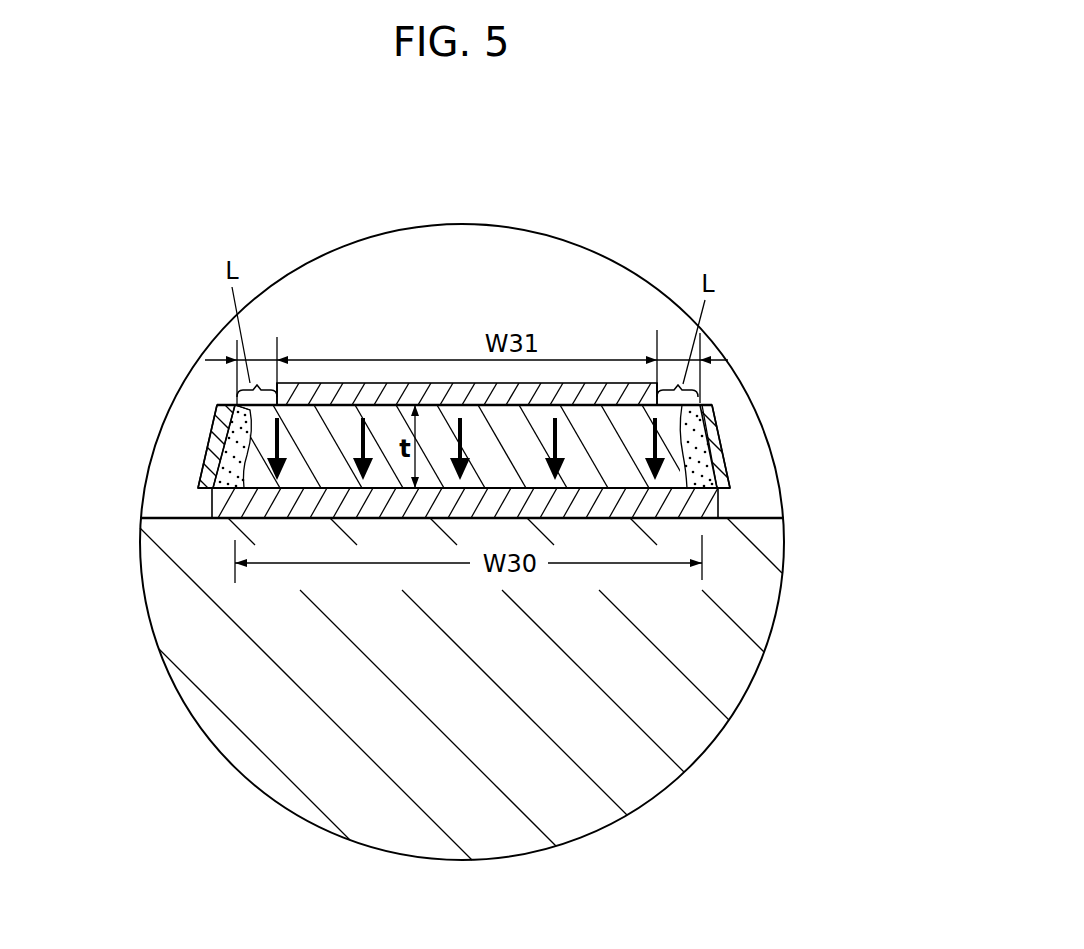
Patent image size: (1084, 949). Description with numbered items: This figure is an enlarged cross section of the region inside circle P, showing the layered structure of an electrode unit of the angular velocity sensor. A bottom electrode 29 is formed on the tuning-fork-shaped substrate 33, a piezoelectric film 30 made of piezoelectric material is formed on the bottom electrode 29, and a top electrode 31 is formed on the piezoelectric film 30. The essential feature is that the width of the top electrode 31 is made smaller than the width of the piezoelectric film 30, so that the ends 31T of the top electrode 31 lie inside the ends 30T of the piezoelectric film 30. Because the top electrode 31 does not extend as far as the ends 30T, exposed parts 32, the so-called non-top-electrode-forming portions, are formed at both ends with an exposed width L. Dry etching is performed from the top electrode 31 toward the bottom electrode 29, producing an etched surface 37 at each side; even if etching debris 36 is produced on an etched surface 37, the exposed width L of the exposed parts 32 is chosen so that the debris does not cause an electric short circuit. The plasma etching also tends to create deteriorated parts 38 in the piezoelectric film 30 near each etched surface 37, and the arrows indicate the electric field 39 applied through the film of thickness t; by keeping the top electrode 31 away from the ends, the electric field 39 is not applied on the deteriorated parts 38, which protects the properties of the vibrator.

The bottom electrode 29 is at (232, 521).
The piezoelectric film 30 is at (330, 417).
The ends of piezoelectric film 30T is at (233, 405).
The top electrode 31 is at (455, 393).
The ends of top electrode 31T is at (277, 383).
The exposed parts 32 is at (245, 388).
The tuning-fork-shaped substrate 33 is at (642, 698).
The etching debris 36 is at (200, 482).
The etched surface 37 is at (225, 427).
The deteriorated parts 38 is at (237, 467).
The electric field 39 is at (363, 430).
The circle P is at (777, 622).